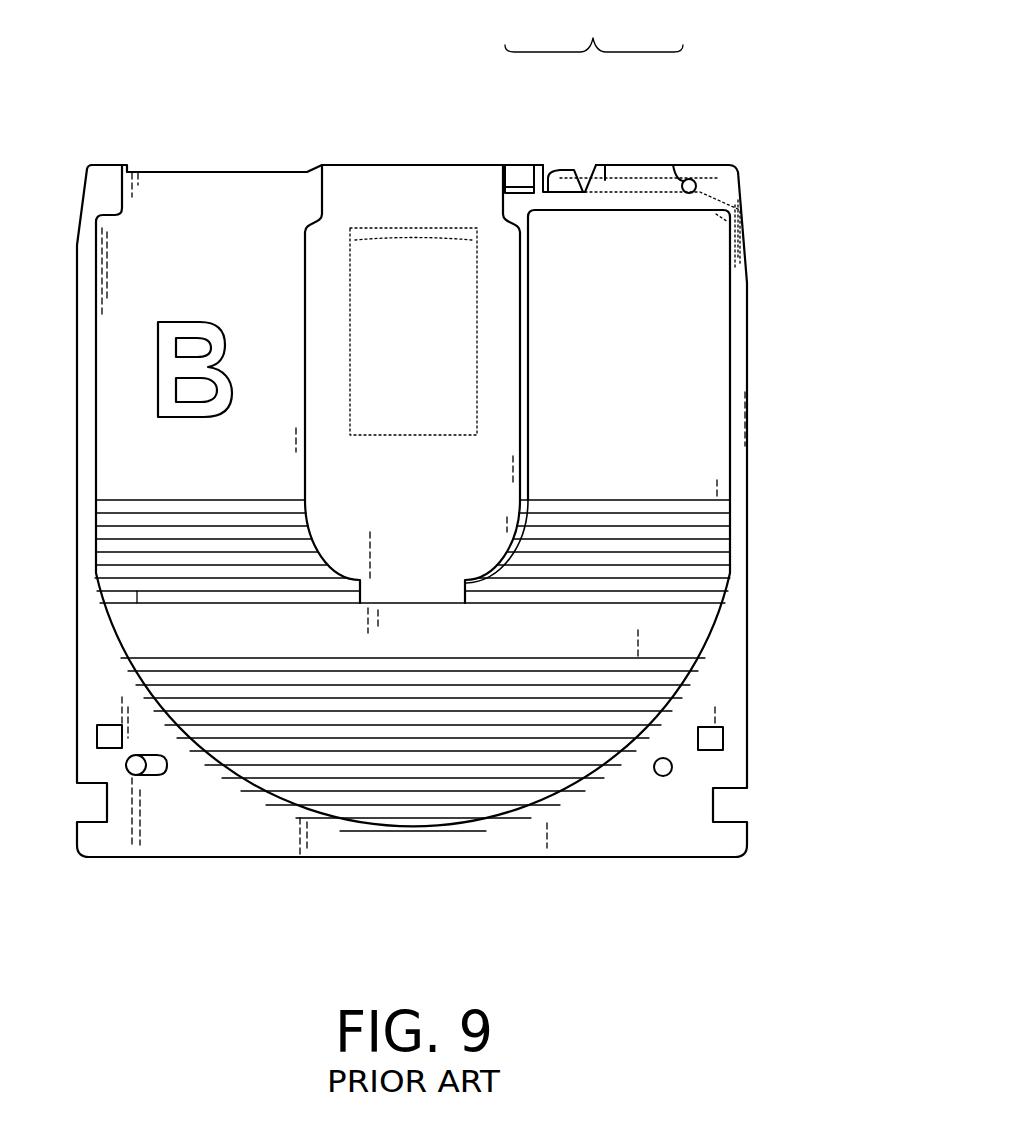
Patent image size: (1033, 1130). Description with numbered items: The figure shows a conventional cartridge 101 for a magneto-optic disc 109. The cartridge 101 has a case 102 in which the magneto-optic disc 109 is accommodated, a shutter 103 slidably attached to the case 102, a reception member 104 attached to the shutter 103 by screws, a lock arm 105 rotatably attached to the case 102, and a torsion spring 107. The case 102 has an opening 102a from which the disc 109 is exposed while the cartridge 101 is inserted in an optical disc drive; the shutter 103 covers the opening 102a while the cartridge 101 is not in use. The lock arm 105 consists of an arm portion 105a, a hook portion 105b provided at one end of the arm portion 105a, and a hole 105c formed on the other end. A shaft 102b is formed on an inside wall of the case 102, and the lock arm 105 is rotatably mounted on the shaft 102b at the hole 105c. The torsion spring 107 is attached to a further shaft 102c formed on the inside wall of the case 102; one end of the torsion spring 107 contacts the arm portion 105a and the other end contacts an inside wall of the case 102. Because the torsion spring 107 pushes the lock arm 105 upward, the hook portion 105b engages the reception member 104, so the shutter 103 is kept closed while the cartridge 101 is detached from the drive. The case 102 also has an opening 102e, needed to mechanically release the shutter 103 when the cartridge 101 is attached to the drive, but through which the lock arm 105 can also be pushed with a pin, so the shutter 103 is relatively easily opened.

The cartridge 101 is at (768, 367).
The case 102 is at (738, 523).
The opening 102a is at (350, 235).
The shaft 102b is at (710, 180).
The shaft 102c is at (723, 217).
The opening 102e is at (539, 150).
The shutter 103 is at (372, 182).
The reception member 104 is at (509, 178).
The lock arm 105 is at (622, 134).
The arm portion 105a is at (633, 177).
The hook portion 105b is at (567, 172).
The hole 105c is at (675, 170).
The torsion spring 107 is at (738, 264).
The magneto-optic disc 109 is at (380, 333).